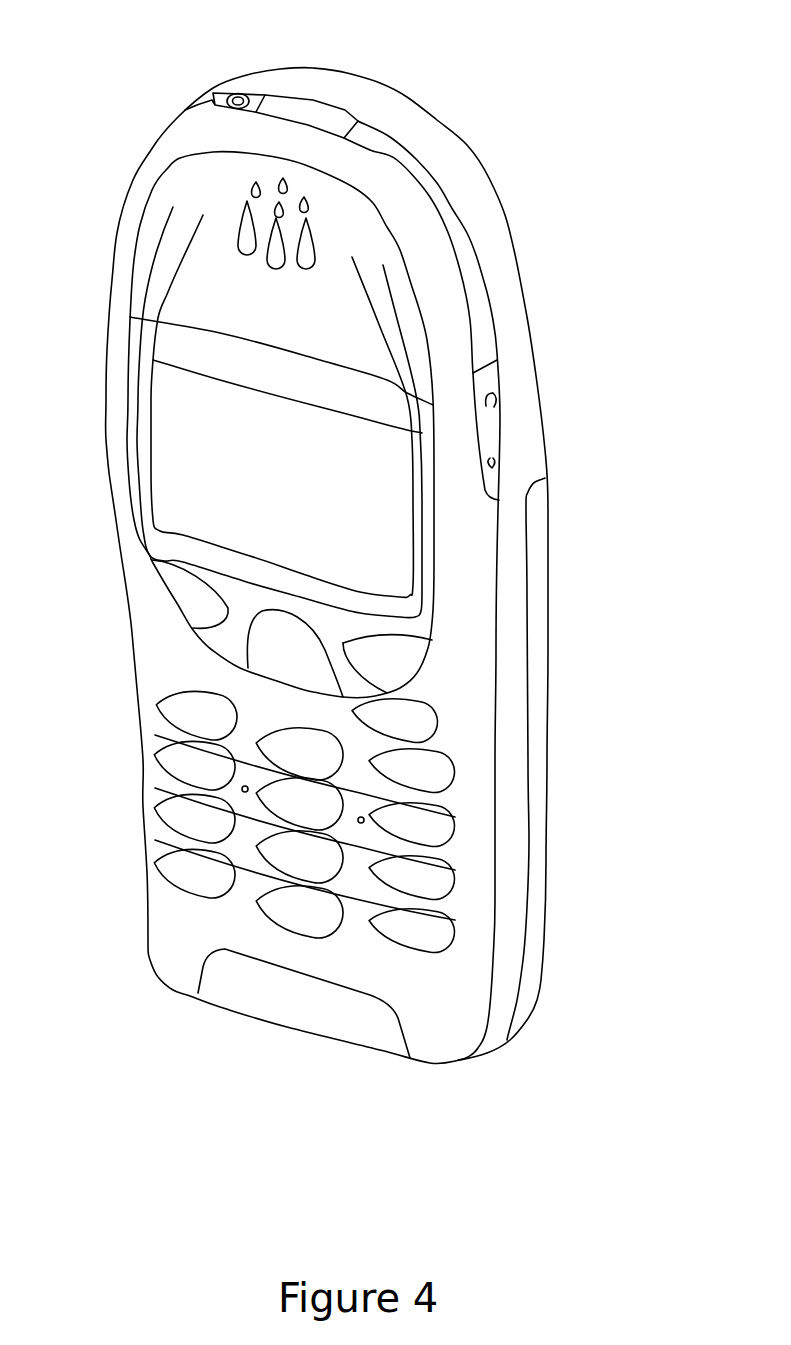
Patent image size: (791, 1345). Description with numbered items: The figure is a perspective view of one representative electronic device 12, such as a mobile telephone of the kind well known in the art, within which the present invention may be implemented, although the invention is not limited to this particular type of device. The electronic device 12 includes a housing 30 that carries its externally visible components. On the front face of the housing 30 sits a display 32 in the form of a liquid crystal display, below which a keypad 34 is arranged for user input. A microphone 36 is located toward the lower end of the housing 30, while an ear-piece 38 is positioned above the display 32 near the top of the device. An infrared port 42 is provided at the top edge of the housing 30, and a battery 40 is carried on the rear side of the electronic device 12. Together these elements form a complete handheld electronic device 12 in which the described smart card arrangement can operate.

The electronic device 12 is at (469, 82).
The housing 30 is at (507, 268).
The display 32 is at (380, 528).
The keypad 34 is at (410, 940).
The microphone 36 is at (227, 990).
The ear-piece 38 is at (265, 218).
The battery 40 is at (537, 913).
The infrared port 42 is at (307, 110).